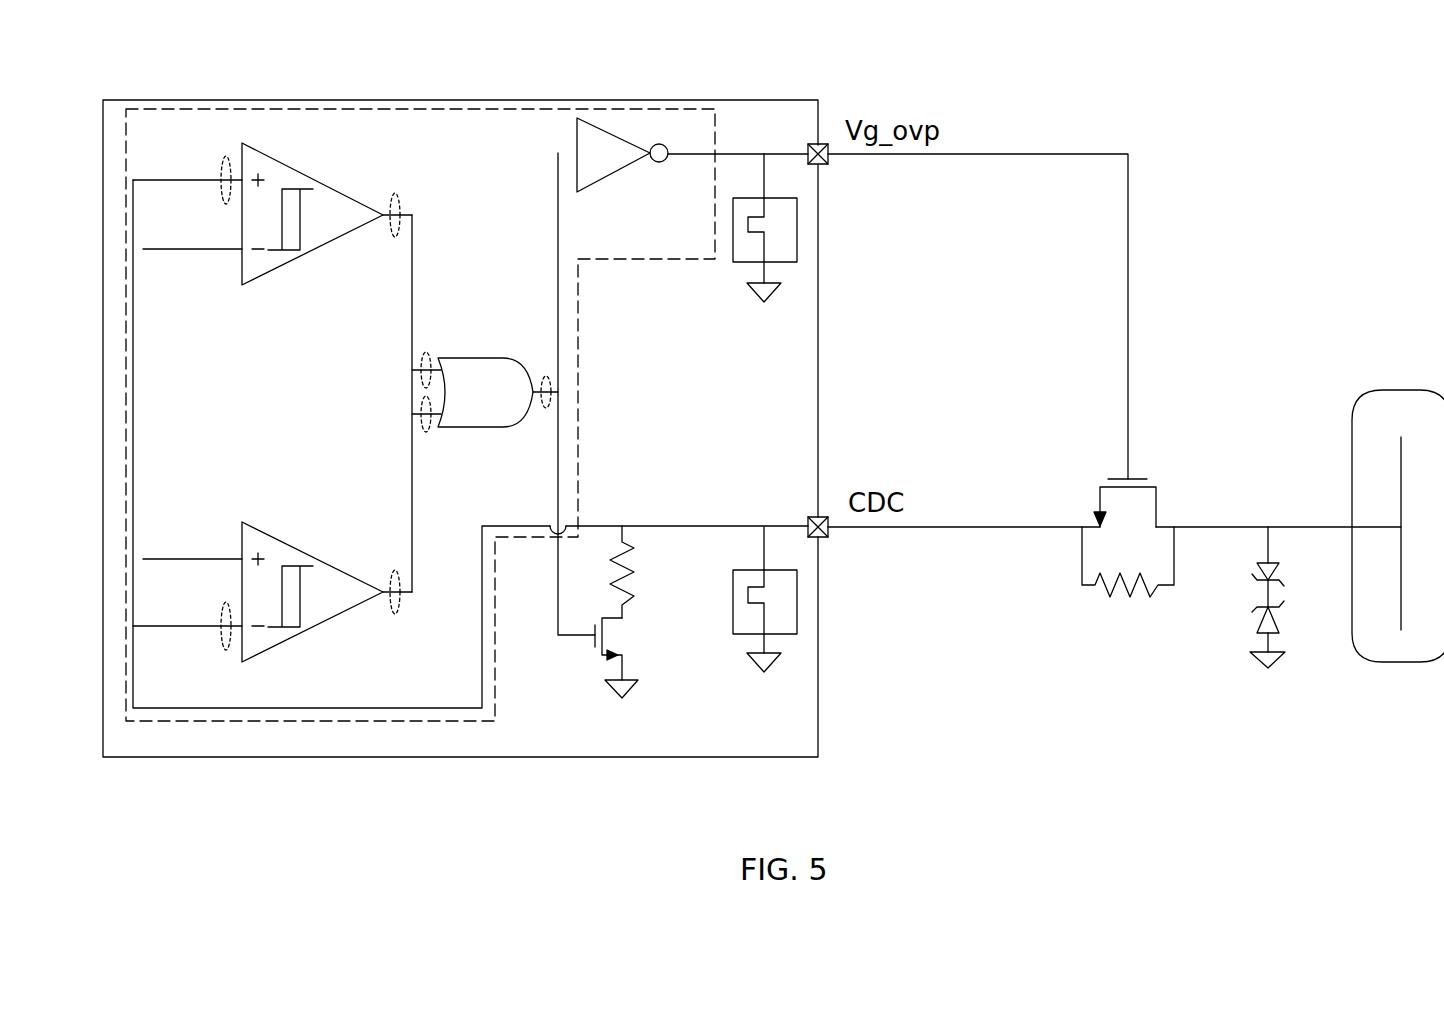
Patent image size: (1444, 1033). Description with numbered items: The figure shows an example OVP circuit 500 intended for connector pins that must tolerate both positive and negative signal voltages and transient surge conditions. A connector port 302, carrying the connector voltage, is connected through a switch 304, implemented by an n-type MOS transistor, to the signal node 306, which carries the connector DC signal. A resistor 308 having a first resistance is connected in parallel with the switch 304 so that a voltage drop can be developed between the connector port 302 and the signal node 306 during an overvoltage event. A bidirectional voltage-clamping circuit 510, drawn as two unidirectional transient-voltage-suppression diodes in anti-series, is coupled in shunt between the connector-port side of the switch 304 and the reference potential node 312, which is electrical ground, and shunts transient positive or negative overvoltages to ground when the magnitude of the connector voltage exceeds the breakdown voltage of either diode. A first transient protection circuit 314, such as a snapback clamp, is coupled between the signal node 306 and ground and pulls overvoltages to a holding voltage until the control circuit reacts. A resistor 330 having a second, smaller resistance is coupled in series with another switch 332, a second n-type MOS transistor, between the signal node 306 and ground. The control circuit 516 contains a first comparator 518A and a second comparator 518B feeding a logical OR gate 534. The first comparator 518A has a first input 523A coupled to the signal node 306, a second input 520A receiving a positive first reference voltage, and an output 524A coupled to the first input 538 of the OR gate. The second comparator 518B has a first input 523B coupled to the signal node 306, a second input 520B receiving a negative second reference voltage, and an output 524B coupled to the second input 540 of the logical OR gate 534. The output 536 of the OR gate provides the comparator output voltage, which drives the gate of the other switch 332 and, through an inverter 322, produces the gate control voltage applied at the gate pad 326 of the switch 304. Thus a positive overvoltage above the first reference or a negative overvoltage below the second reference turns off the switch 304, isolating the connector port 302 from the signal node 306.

The OVP circuit 500 is at (153, 45).
The control circuit 516 is at (354, 108).
The first comparator 518A is at (280, 275).
The second comparator 518B is at (280, 655).
The second input of first comparator 520A is at (218, 247).
The second input of second comparator 520B is at (218, 561).
The first input of first comparator 523A is at (220, 168).
The first input of second comparator 523B is at (222, 644).
The output of first comparator 524A is at (394, 195).
The output of second comparator 524B is at (394, 572).
The logical OR gate 534 is at (492, 357).
The output of logical OR gate 536 is at (545, 405).
The first input of logical OR gate 538 is at (432, 355).
The second input of logical OR gate 540 is at (418, 400).
The inverter 322 is at (620, 165).
The gate overvoltage protection pad 326 is at (825, 166).
The signal node 306 is at (825, 538).
The resistor 330 is at (630, 555).
The other switch 332 is at (610, 657).
The first transient protection circuit 314 is at (785, 634).
The switch 304 is at (1135, 478).
The resistor 308 is at (1096, 592).
The bidirectional voltage-clamping circuit 510 is at (1262, 620).
The reference potential node 312 is at (1262, 662).
The connector port 302 is at (1353, 412).